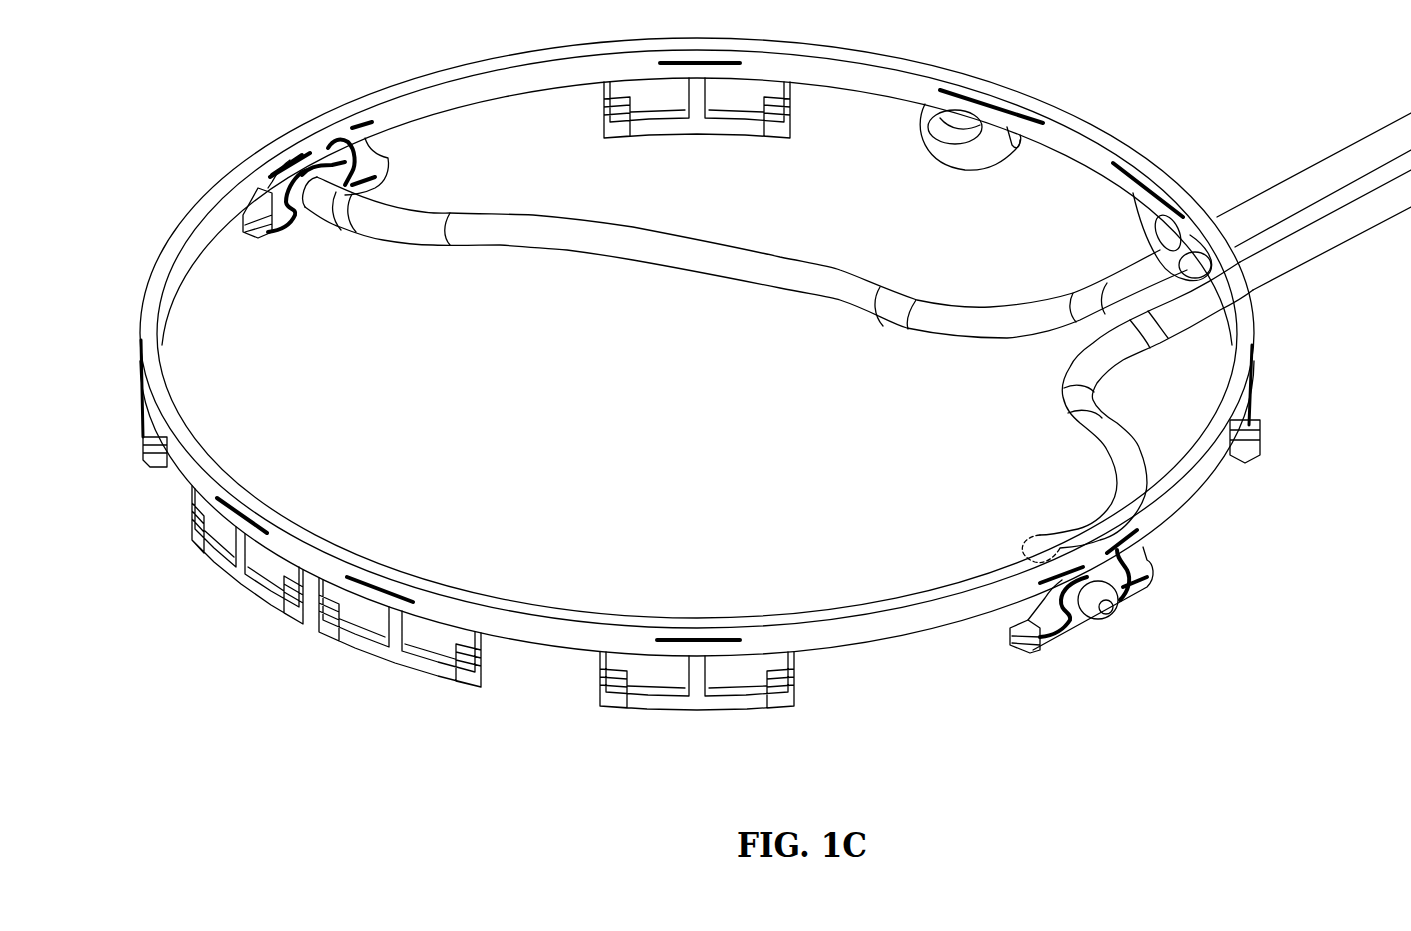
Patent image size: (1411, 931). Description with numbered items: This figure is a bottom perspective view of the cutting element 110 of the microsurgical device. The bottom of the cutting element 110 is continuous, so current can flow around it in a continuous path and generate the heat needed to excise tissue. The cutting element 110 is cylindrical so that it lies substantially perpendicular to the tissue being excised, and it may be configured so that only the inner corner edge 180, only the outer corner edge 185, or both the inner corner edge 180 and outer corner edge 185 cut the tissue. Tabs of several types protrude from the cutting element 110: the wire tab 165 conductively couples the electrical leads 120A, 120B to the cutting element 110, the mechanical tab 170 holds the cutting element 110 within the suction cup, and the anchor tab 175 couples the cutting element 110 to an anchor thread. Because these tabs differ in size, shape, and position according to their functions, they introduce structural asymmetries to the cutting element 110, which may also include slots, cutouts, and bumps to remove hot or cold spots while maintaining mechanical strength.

The cutting element 110 is at (900, 640).
The electrical lead 120A is at (1325, 250).
The electrical lead 120B is at (1397, 122).
The wire tab 165 is at (260, 247).
The mechanical tab 170 is at (763, 710).
The anchor tab 175 is at (952, 157).
The inner corner edge 180 is at (180, 410).
The outer corner edge 185 is at (1173, 490).